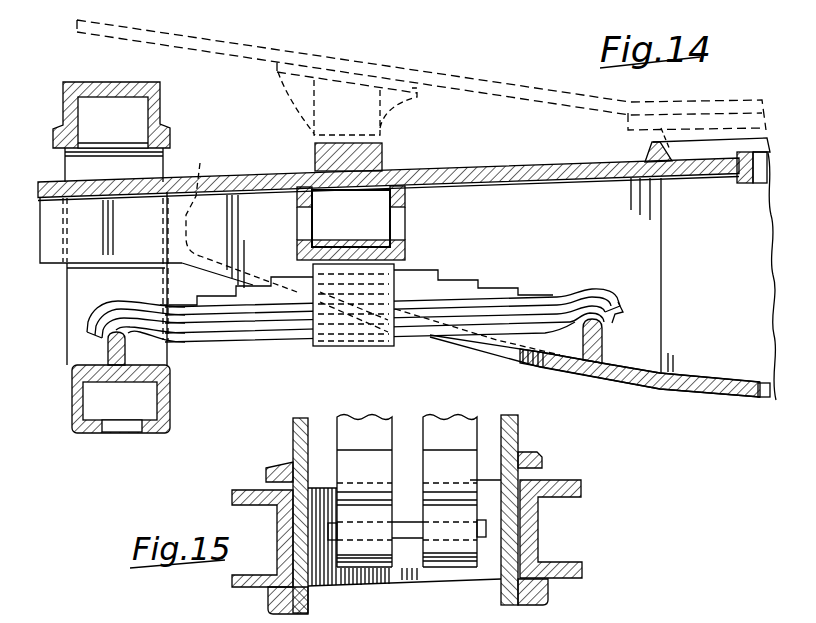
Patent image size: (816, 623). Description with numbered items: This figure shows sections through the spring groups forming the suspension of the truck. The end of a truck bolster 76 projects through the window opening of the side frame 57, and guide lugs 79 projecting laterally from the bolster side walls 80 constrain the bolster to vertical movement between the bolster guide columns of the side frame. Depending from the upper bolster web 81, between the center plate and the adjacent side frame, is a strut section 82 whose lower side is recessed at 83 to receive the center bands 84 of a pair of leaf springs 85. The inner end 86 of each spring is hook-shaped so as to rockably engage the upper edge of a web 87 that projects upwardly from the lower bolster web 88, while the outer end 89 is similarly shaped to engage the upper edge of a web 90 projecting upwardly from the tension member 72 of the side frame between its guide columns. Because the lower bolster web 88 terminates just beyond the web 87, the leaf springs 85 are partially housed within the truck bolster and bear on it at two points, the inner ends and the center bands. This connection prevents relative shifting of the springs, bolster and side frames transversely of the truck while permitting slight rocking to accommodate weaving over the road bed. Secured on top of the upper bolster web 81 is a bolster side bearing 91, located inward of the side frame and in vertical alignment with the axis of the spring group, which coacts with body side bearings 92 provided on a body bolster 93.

In FIG. 14, the side frame 57 is at (171, 108).
In FIG. 14, the tension member 72 is at (73, 425).
In FIG. 14, the truck bolster 76 is at (249, 173).
In FIG. 14, the guide lugs 79 is at (241, 217).
In FIG. 15, the guide lugs 79 is at (267, 470).
In FIG. 14, the side walls 80 is at (75, 255).
In FIG. 15, the side walls 80 is at (300, 516).
In FIG. 14, the upper bolster web 81 is at (492, 166).
In FIG. 14, the strut section 82 is at (405, 199).
In FIG. 14, the recess 83 is at (405, 251).
In FIG. 14, the center bands 84 is at (400, 278).
In FIG. 14, the leaf springs 85 is at (515, 290).
In FIG. 15, the leaf springs 85 is at (430, 427).
In FIG. 14, the inner end 86 is at (620, 292).
In FIG. 14, the web 87 is at (603, 335).
In FIG. 14, the lower bolster web 88 is at (677, 373).
In FIG. 14, the outer end 89 is at (90, 317).
In FIG. 15, the outer end 89 is at (442, 556).
In FIG. 14, the web 90 is at (108, 349).
In FIG. 15, the web 90 is at (485, 538).
In FIG. 14, the bolster side bearing 91 is at (383, 146).
In FIG. 14, the body side bearings 92 is at (404, 112).
In FIG. 14, the body bolster 93 is at (440, 72).